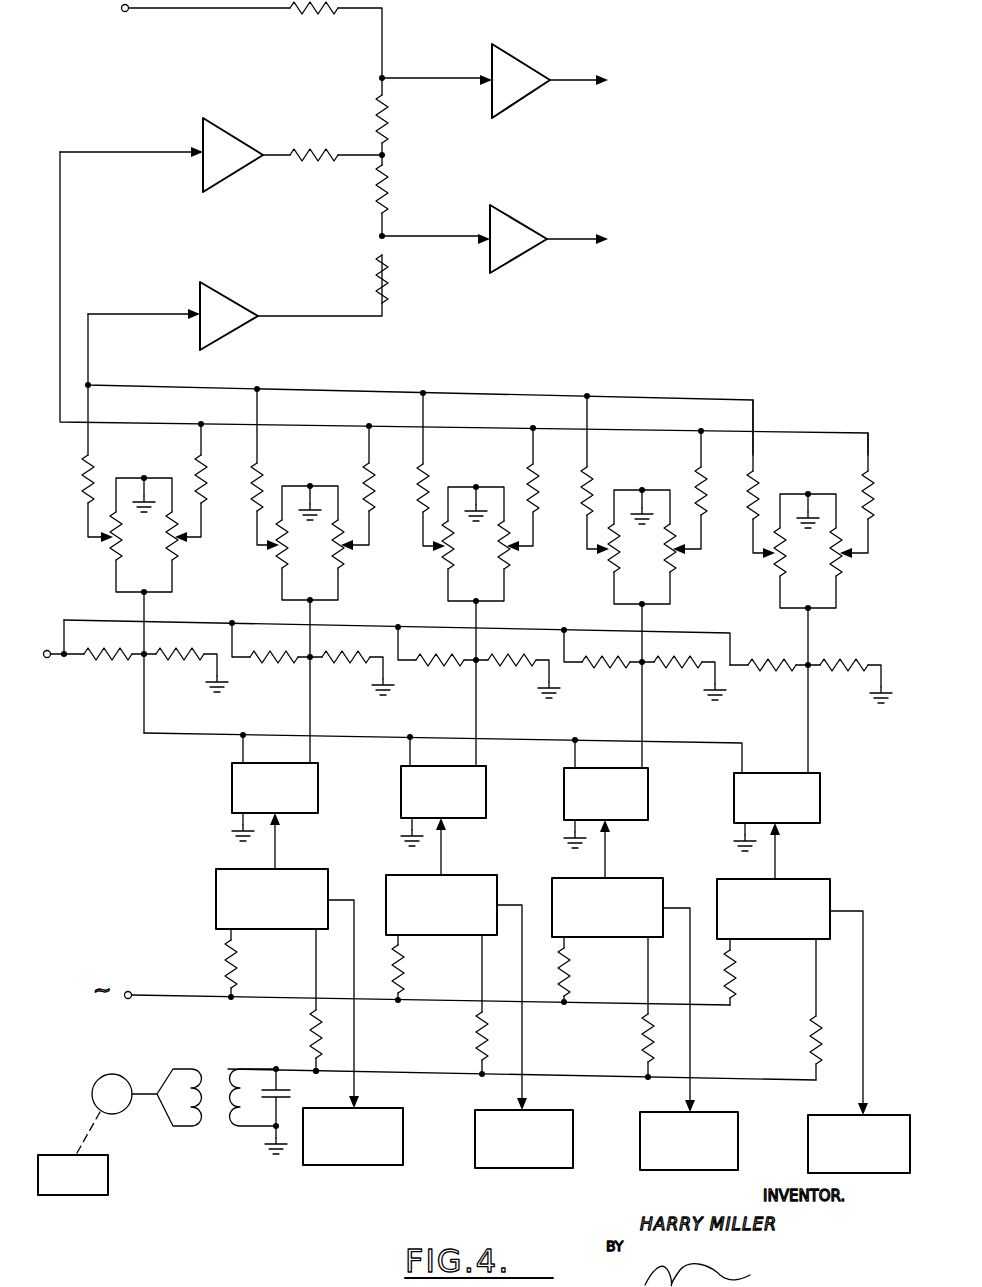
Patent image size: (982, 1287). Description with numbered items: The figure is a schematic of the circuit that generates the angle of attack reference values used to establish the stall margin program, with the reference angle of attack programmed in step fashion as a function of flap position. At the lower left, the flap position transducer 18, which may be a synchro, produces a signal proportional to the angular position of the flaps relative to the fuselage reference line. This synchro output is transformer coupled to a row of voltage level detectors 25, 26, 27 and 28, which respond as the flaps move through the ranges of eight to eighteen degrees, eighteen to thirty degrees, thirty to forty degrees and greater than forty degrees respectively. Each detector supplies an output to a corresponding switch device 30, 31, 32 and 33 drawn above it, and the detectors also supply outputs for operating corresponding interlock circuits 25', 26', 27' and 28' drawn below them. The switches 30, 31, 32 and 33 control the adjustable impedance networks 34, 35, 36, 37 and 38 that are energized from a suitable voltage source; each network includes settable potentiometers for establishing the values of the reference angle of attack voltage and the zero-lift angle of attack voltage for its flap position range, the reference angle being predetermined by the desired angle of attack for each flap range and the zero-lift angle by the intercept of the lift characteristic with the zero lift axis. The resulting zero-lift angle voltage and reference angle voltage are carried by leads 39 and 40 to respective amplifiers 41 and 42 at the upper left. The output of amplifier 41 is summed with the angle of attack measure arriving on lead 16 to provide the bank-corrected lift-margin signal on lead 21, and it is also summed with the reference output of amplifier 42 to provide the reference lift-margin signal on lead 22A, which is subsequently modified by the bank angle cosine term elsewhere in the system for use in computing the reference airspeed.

The lead 16 is at (137, 12).
The lead 21 is at (570, 80).
The lead 22A is at (566, 236).
The amplifier 41 is at (200, 136).
The amplifier 42 is at (200, 274).
The lead 40 is at (88, 343).
The lead 39 is at (60, 425).
The adjustable impedance network 34 is at (206, 609).
The adjustable impedance network 35 is at (372, 617).
The adjustable impedance network 36 is at (538, 618).
The adjustable impedance network 37 is at (704, 621).
The adjustable impedance network 38 is at (870, 625).
The switch device 30 is at (232, 796).
The switch device 31 is at (401, 799).
The switch device 32 is at (564, 802).
The switch device 33 is at (734, 805).
The voltage level detector 25 is at (258, 960).
The voltage level detector 26 is at (434, 964).
The voltage level detector 27 is at (601, 966).
The voltage level detector 28 is at (769, 969).
The interlock circuit 25' is at (353, 1155).
The interlock circuit 26' is at (495, 1139).
The interlock circuit 27' is at (660, 1141).
The interlock circuit 28' is at (829, 1144).
The flap position transducer 18 is at (111, 1074).